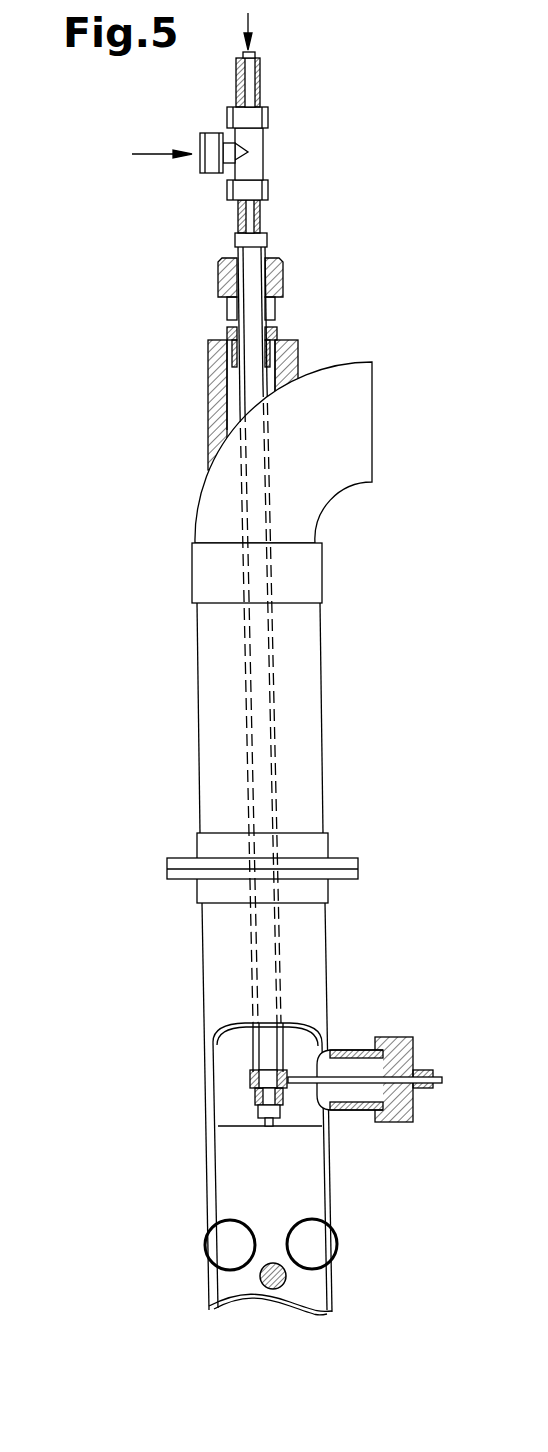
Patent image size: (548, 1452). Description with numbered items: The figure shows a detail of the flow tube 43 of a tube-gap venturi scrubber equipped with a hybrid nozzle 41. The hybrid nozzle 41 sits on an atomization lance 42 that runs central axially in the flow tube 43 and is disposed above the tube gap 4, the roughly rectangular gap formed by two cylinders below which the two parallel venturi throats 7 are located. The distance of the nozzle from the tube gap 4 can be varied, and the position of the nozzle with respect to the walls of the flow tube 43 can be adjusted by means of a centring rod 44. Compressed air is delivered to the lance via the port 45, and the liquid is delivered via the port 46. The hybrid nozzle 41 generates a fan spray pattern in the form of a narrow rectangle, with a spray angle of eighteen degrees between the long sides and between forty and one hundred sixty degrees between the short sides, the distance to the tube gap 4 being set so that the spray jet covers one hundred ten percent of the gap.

The tube gap 4 is at (272, 1242).
The venturi throats 7 is at (293, 1272).
The hybrid nozzle 41 is at (266, 1128).
The atomization lance 42 is at (267, 658).
The flow tube 43 is at (305, 728).
The centring rod 44 is at (350, 1080).
The port 45 is at (157, 155).
The port 46 is at (249, 18).